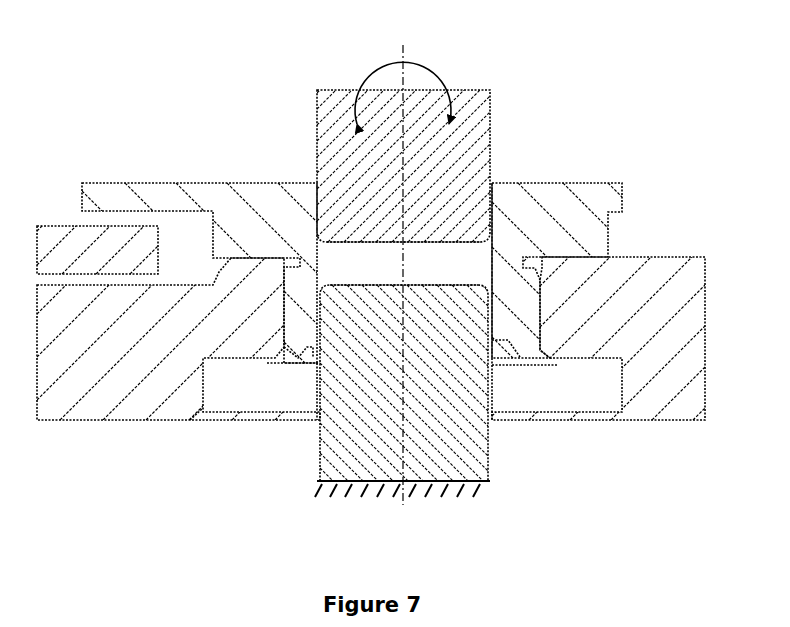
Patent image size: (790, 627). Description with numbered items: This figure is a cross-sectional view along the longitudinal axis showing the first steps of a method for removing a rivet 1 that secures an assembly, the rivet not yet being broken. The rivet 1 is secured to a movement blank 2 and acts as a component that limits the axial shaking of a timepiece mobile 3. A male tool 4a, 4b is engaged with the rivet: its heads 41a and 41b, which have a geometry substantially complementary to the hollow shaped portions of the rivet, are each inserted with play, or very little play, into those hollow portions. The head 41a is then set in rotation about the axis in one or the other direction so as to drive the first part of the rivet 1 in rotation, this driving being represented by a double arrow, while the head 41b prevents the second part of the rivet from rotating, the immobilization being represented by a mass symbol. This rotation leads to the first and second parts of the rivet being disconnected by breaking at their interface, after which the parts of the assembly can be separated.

The rivet 1 is at (565, 212).
The movement blank 2 is at (694, 273).
The timepiece mobile 3 is at (52, 237).
The tool 4a is at (350, 127).
The tool 4b is at (345, 469).
The head 41a is at (340, 233).
The head 41b is at (443, 297).